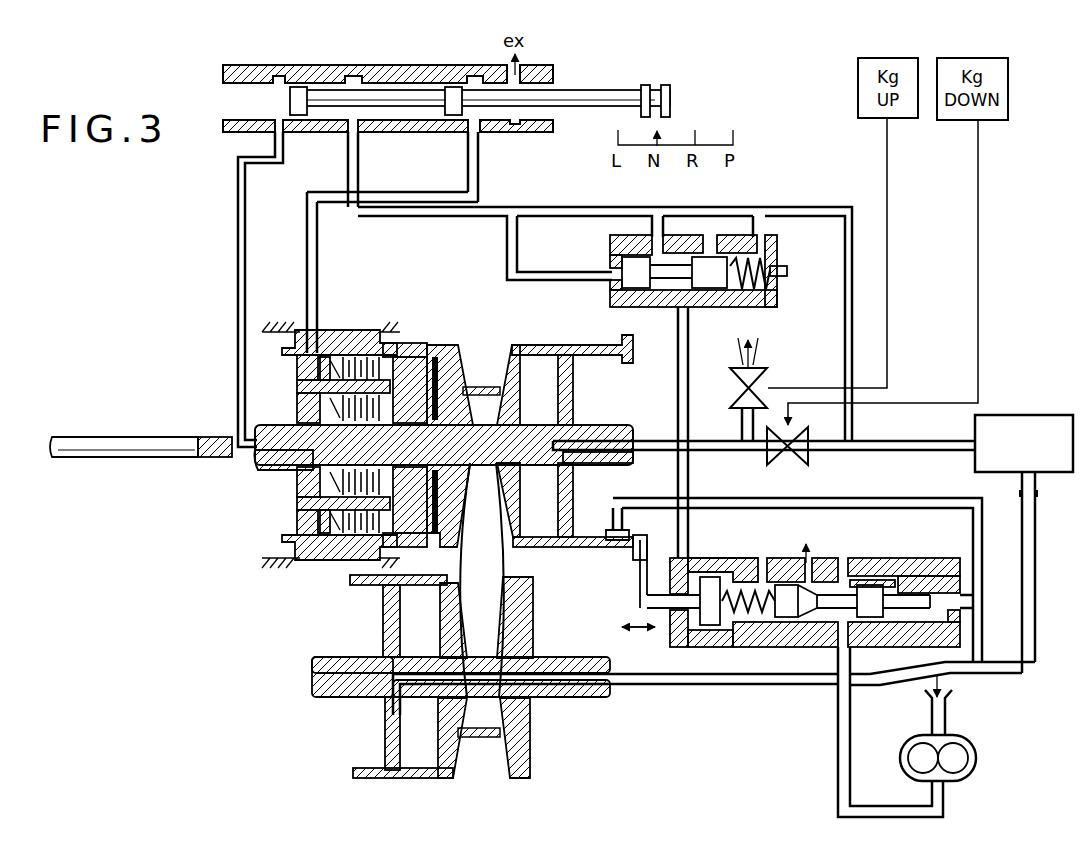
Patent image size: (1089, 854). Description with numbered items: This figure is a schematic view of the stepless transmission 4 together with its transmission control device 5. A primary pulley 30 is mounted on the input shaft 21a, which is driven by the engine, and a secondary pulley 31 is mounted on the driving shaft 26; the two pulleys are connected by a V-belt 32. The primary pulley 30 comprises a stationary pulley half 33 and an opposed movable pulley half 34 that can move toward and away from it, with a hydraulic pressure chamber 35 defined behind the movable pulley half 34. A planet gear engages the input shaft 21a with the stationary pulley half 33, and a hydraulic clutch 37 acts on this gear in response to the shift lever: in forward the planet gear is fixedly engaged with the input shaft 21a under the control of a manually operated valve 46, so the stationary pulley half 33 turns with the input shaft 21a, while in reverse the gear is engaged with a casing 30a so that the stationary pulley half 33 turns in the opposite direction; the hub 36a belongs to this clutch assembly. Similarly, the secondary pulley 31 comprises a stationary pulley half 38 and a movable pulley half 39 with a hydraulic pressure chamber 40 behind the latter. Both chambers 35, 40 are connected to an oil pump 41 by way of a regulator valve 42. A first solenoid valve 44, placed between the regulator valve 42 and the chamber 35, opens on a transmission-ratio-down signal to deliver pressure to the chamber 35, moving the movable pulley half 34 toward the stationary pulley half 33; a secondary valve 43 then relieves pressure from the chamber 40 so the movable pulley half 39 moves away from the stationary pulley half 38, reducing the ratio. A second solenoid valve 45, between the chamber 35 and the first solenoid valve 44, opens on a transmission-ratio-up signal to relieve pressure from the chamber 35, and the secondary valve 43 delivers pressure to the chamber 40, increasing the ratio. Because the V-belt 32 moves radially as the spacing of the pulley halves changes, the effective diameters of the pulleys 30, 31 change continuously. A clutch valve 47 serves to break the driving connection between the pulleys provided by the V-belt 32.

The stepless transmission 4 is at (415, 474).
The transmission control device 5 is at (754, 362).
The input shaft 21a is at (258, 471).
The driving shaft 26 is at (322, 678).
The primary pulley 30 is at (530, 489).
The casing 30a is at (284, 357).
The secondary pulley 31 is at (436, 690).
The V-belt 32 is at (482, 386).
The stationary pulley half 33 is at (447, 344).
The movable pulley half 34 is at (552, 345).
The hydraulic pressure chamber 35 is at (552, 390).
The clutch hub 36a is at (422, 368).
The hydraulic clutch 37 is at (337, 538).
The stationary pulley half 38 is at (523, 747).
The movable pulley half 39 is at (355, 772).
The hydraulic pressure chamber 40 is at (412, 727).
The oil pump 41 is at (977, 748).
The regulator valve 42 is at (1046, 413).
The secondary valve 43 is at (897, 528).
The first solenoid valve 44 is at (808, 452).
The second solenoid valve 45 is at (766, 366).
The manually operated valve 46 is at (467, 68).
The clutch valve 47 is at (782, 301).